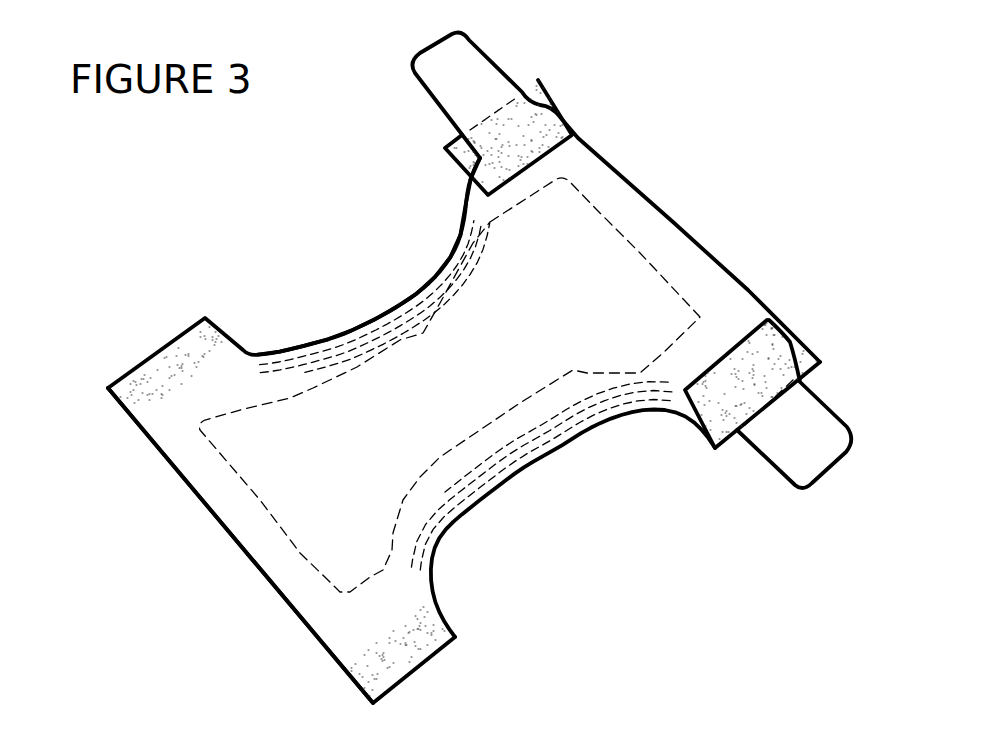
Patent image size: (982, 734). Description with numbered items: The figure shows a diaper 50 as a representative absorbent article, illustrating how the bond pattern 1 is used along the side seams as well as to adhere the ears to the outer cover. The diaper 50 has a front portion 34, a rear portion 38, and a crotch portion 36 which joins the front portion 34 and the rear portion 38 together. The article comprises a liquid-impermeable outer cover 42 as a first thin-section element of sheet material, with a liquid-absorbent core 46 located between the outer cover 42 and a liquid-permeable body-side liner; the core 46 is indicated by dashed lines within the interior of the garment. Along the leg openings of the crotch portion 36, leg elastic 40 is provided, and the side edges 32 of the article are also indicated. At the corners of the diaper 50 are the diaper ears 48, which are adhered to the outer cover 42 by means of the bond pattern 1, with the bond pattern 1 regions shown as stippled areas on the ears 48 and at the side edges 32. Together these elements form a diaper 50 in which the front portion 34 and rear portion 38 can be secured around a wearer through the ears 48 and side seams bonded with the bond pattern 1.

The diaper 50 is at (665, 184).
The diaper ear 48 is at (480, 88).
The bond pattern 1 is at (480, 157).
The side edges 32 is at (158, 347).
The liquid-impermeable outer cover 42 is at (185, 448).
The rear portion 38 is at (640, 298).
The crotch portion 36 is at (437, 368).
The front portion 34 is at (347, 540).
The leg elastic 40 is at (302, 358).
The liquid-absorbent core 46 is at (323, 487).